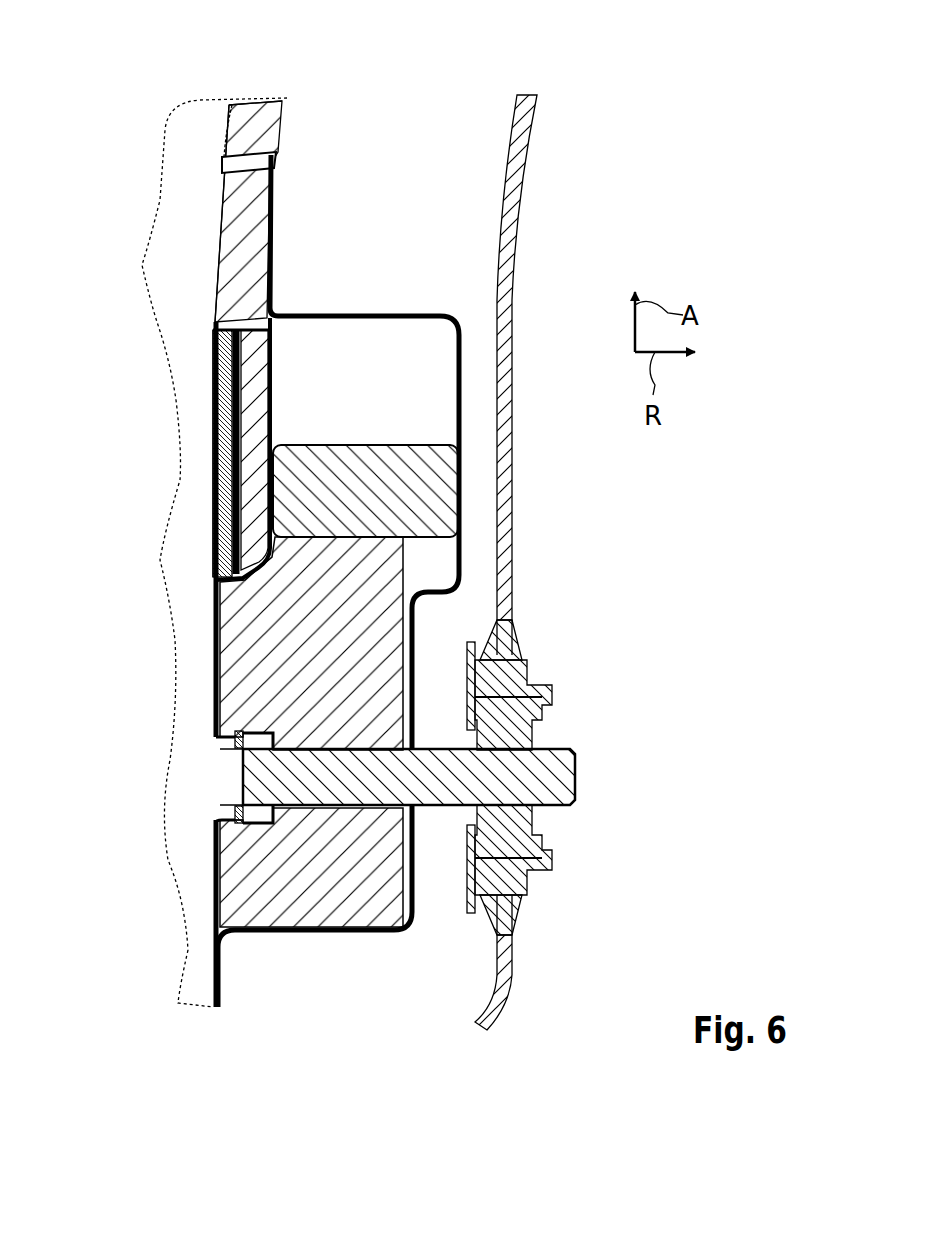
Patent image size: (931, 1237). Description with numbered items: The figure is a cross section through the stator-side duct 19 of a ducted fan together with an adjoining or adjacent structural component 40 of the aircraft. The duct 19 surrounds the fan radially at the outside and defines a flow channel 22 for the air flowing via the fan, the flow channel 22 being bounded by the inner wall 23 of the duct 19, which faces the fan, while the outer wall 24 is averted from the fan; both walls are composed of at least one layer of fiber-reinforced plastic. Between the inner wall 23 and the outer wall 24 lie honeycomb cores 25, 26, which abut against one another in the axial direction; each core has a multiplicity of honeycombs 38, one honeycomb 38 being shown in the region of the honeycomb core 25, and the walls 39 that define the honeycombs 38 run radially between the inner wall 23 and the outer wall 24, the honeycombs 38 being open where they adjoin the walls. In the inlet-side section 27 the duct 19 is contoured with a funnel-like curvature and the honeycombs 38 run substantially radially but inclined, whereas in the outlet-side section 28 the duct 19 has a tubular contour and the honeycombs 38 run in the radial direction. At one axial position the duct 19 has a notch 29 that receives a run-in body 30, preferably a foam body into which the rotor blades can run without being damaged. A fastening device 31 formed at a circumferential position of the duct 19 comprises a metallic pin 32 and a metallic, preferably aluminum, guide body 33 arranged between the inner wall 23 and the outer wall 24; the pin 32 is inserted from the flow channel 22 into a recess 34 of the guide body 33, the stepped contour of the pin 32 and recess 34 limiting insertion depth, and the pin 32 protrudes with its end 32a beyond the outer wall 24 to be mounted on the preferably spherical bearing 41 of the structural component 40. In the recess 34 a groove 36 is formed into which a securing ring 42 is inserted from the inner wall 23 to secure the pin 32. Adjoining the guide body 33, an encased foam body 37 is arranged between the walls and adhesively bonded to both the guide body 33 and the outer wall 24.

The stator-side duct 19 is at (299, 120).
The flow channel 22 is at (177, 182).
The inner wall 23 is at (211, 270).
The outer wall 24 is at (279, 260).
The honeycomb core 25 is at (265, 150).
The honeycomb core 26 is at (255, 392).
The inlet-side section 27 is at (211, 225).
The outlet-side section 28 is at (211, 423).
The notch 29 is at (230, 340).
The run-in body 30 is at (215, 493).
The fastening device 31 is at (358, 905).
The pin 32 is at (573, 803).
The end of the pin 32a is at (567, 762).
The guide body 33 is at (288, 915).
The recess 34 is at (211, 787).
The groove 36 is at (238, 831).
The foam body 37 is at (443, 480).
The honeycomb 38 is at (222, 156).
The walls of the honeycombs 39 is at (235, 156).
The structural component 40 is at (508, 212).
The spherical bearing 41 is at (562, 705).
The securing ring 42 is at (237, 742).